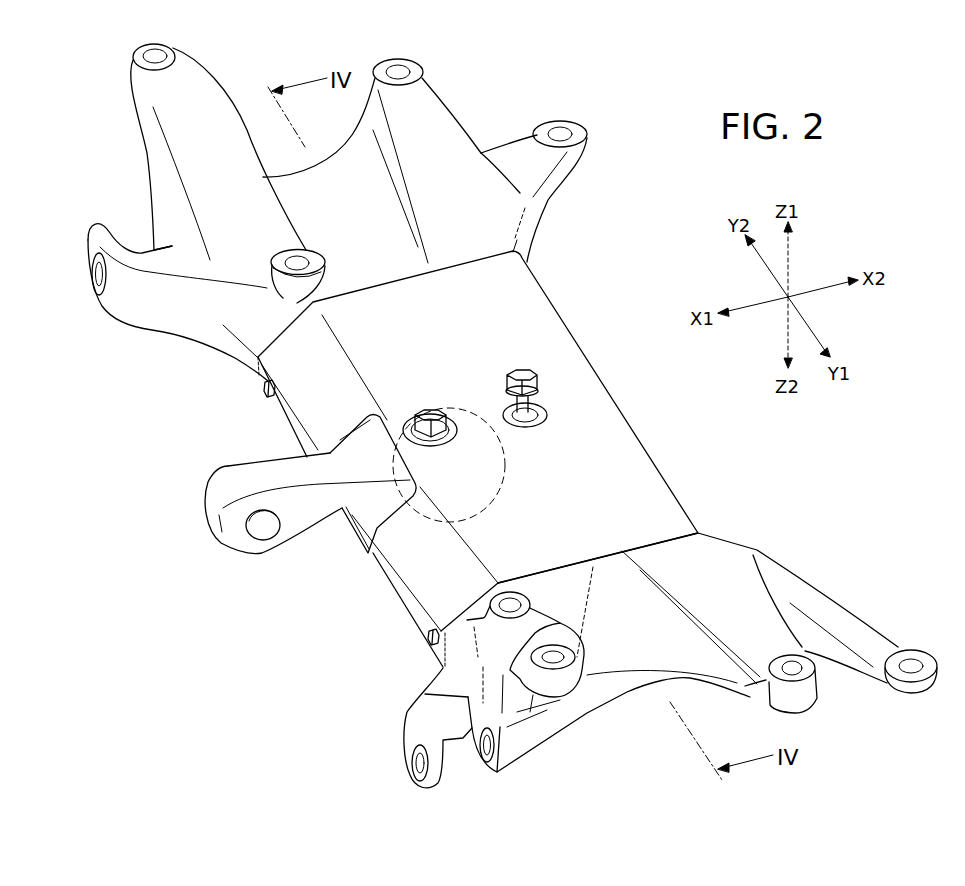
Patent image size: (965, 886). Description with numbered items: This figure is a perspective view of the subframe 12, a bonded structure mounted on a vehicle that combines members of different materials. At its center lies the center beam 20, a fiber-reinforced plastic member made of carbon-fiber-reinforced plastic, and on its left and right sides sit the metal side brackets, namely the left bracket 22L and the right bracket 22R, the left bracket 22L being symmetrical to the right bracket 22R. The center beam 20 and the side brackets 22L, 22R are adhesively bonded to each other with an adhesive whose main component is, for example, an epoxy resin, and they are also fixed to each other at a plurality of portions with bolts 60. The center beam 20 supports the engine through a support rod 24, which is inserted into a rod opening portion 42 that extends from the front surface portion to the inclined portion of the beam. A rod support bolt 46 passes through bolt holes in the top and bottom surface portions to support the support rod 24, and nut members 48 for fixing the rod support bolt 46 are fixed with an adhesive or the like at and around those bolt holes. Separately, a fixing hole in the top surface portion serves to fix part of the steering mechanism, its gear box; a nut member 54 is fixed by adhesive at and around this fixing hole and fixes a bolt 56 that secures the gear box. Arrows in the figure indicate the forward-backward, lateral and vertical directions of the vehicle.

The subframe 12 is at (870, 199).
The center beam 20 is at (629, 420).
The right bracket 22R is at (457, 111).
The left bracket 22L is at (787, 570).
The support rod 24 is at (227, 487).
The rod opening portion 42 is at (366, 440).
The rod support bolt 46 is at (427, 412).
The nut member 48 is at (455, 440).
The nut member 54 is at (542, 418).
The bolt 56 is at (523, 372).
The bolt 60 is at (272, 383).